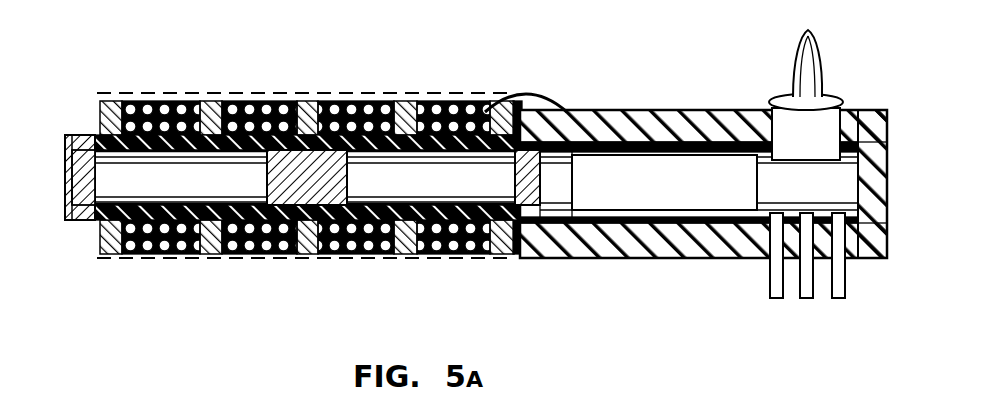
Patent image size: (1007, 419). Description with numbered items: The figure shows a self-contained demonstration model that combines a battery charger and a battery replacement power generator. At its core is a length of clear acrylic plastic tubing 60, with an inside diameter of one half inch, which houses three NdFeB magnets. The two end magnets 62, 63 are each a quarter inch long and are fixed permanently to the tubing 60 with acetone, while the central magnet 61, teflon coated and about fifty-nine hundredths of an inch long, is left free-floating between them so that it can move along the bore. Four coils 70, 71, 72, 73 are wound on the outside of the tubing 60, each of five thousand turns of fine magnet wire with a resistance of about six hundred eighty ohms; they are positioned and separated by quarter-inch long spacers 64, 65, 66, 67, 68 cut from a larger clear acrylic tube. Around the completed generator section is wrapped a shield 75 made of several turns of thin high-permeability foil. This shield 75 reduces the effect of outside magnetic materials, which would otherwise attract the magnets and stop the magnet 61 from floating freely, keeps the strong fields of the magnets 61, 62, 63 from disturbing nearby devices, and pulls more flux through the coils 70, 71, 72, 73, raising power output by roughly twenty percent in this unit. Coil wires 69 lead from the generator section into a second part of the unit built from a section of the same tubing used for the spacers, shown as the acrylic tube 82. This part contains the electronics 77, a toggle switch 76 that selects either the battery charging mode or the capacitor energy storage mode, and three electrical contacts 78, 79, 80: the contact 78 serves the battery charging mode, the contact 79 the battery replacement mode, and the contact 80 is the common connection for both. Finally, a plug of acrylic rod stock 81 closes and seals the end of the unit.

The clear acrylic plastic tubing 60 is at (81, 135).
The magnet 61 is at (325, 200).
The magnet 62 is at (83, 222).
The magnet 63 is at (543, 260).
The spacer 64 is at (108, 93).
The spacer 65 is at (200, 100).
The spacer 66 is at (308, 100).
The spacer 67 is at (408, 100).
The spacer 68 is at (527, 213).
The coil wires 69 is at (527, 96).
The coil 70 is at (134, 100).
The coil 71 is at (263, 100).
The coil 72 is at (363, 100).
The coil 73 is at (464, 100).
The shield 75 is at (421, 262).
The toggle switch 76 is at (788, 123).
The electronics 77 is at (665, 205).
The electrical contact 78 is at (774, 298).
The electrical contact 79 is at (804, 298).
The electrical contact 80 is at (838, 298).
The plug of acrylic rod stock 81 is at (888, 180).
The acrylic tube 82 is at (707, 245).